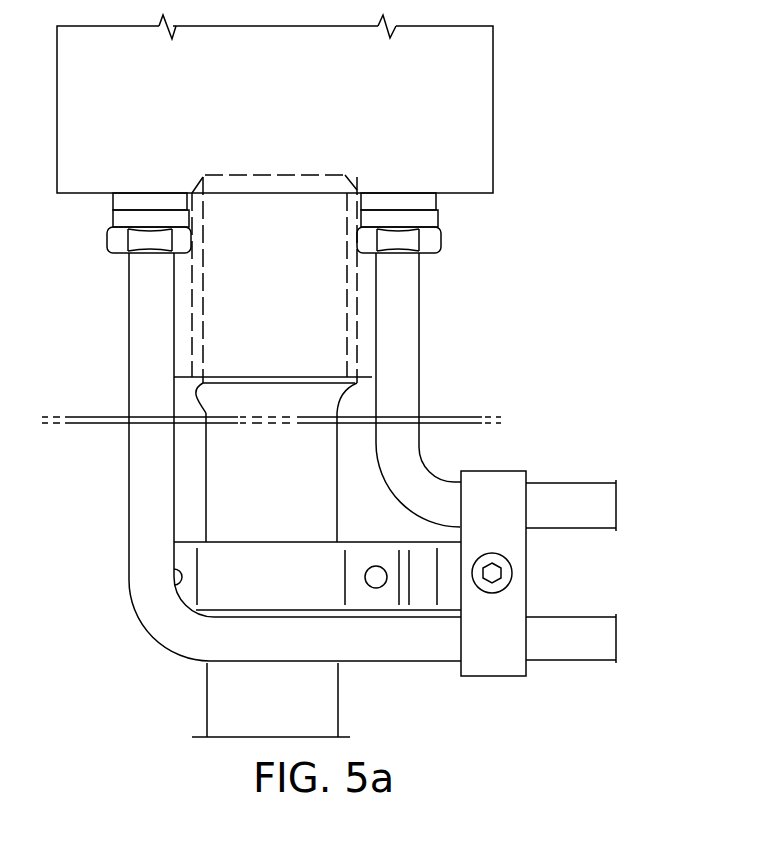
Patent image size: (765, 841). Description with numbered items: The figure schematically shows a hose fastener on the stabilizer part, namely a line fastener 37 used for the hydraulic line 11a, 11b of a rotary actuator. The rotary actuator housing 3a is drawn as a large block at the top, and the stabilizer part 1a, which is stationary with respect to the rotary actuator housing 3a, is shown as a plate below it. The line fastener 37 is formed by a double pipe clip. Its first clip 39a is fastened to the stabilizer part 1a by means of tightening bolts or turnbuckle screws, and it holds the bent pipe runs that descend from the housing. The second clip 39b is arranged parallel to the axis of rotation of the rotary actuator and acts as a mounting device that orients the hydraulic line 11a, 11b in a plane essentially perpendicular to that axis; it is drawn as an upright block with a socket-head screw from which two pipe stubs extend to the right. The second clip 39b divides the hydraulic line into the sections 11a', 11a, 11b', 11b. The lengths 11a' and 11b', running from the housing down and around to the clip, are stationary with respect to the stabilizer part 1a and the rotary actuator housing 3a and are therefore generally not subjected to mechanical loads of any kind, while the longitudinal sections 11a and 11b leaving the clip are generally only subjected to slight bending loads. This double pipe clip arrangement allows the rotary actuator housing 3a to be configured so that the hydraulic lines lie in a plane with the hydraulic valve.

The rotary actuator housing 3a is at (467, 113).
The stabilizer part 1a is at (218, 465).
The line fastener 37 is at (138, 630).
The hydraulic line section 11b' is at (455, 390).
The first clip 39a is at (213, 553).
The second clip 39b is at (503, 488).
The hydraulic line 11b is at (597, 481).
The hydraulic line 11a is at (571, 667).
The hydraulic line section 11a' is at (240, 694).